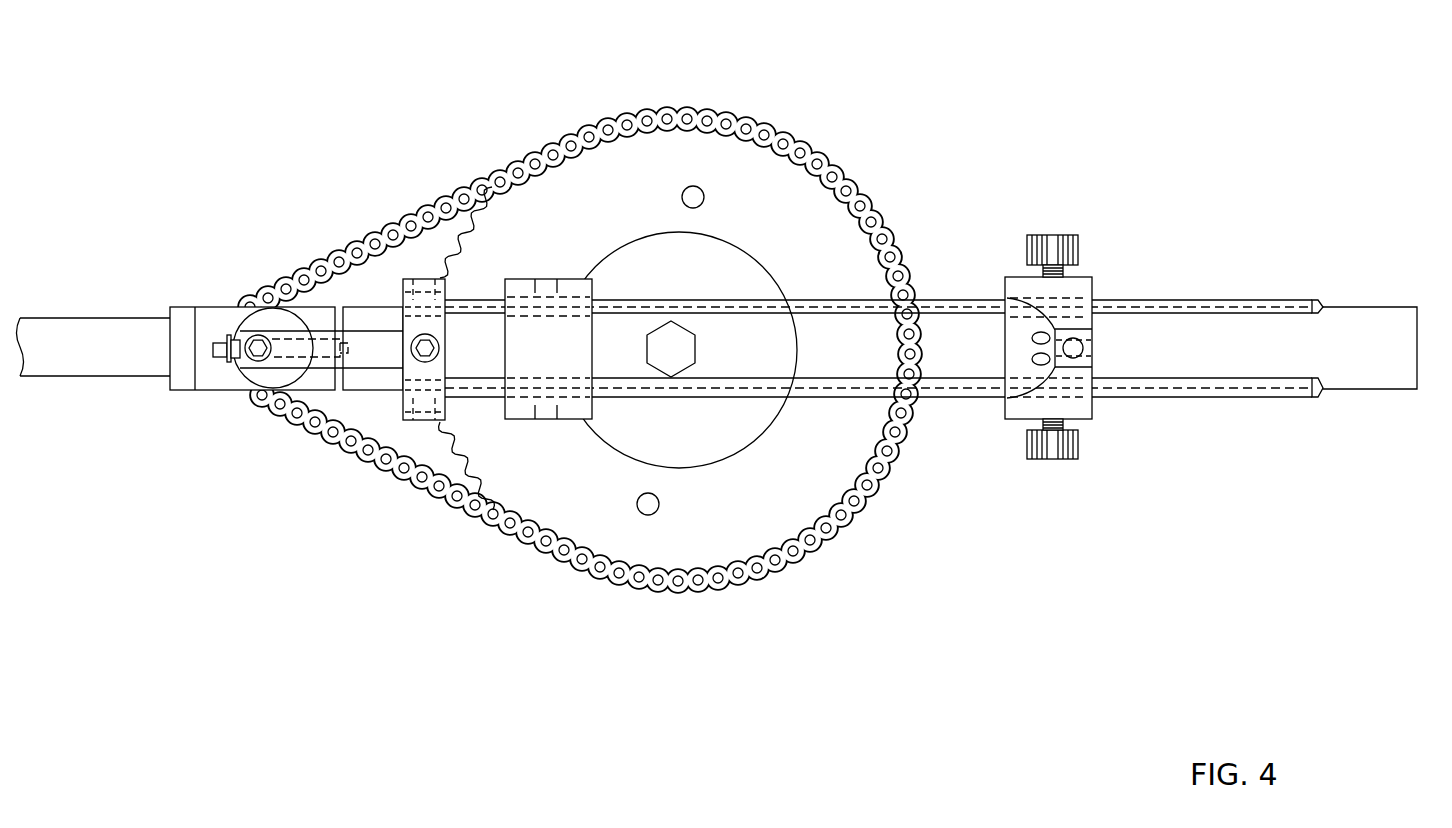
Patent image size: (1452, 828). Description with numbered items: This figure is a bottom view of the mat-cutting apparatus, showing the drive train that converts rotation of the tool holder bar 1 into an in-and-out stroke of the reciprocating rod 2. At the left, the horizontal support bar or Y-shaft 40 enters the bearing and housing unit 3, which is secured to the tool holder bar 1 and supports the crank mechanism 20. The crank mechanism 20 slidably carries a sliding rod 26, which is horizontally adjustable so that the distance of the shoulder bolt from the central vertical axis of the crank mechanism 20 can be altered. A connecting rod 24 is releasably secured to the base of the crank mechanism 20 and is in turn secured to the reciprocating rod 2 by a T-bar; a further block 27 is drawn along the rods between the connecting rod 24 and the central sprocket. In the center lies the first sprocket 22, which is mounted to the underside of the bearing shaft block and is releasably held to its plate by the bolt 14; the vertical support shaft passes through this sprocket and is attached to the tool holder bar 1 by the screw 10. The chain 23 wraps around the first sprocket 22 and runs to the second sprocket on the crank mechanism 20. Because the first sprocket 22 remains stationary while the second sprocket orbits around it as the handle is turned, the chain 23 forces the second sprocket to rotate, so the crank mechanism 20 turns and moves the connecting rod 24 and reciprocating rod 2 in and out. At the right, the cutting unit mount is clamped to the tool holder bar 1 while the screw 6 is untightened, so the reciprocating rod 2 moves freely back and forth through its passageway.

The tool holder bar 1 is at (1355, 305).
The reciprocating rod 2 is at (1287, 399).
The bearing and housing unit 3 is at (207, 377).
The screw 6 is at (1050, 233).
The screw 10 is at (673, 348).
The bolt 14 is at (645, 509).
The crank mechanism 20 is at (273, 324).
The first sprocket 22 is at (758, 489).
The chain 23 is at (492, 533).
The connecting rod 24 is at (371, 344).
The sliding rod 26 is at (228, 369).
The guide block 27 is at (521, 287).
The Y-shaft 40 is at (82, 316).